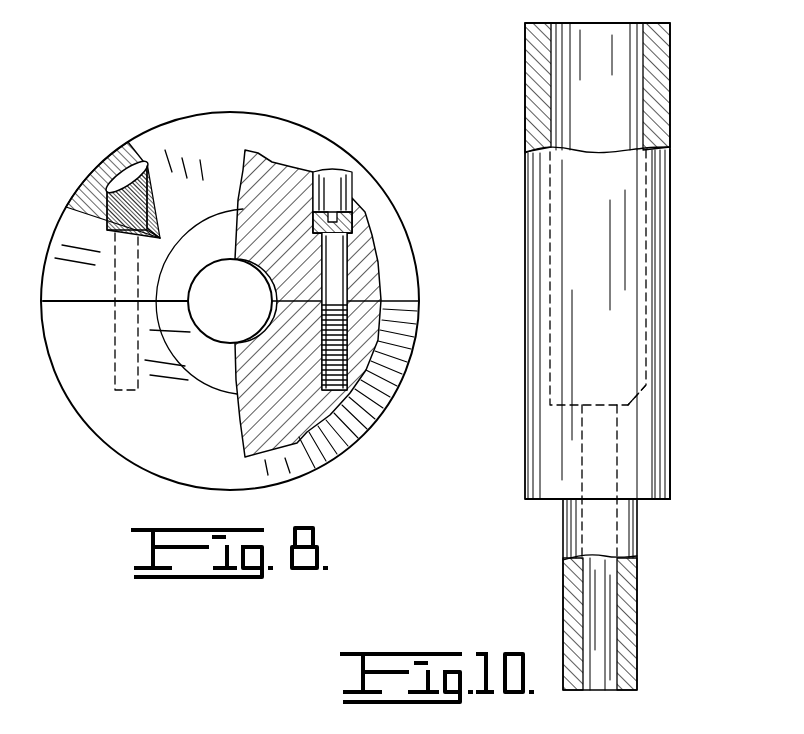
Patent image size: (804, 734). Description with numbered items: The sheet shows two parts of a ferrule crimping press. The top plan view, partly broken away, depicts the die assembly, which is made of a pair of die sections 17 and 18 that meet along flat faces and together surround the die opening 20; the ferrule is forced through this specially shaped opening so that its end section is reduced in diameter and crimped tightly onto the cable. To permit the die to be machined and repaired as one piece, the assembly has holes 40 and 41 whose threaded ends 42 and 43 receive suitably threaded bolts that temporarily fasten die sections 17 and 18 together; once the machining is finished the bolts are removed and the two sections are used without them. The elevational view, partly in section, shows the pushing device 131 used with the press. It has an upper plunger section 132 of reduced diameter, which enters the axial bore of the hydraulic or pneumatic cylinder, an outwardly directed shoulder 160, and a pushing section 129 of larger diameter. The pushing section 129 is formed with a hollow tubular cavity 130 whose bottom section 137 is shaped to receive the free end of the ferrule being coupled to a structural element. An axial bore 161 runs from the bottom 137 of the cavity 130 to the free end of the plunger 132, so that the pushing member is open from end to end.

In FIG. 8, the die section 17 is at (158, 453).
In FIG. 8, the die section 18 is at (268, 172).
In FIG. 8, the die opening 20 is at (242, 301).
In FIG. 8, the hole 40 is at (325, 188).
In FIG. 8, the hole 41 is at (128, 179).
In FIG. 8, the threaded end 42 is at (340, 343).
In FIG. 8, the threaded end 43 is at (115, 372).
In FIG. 10, the pushing section 129 is at (662, 222).
In FIG. 10, the hollow tubular cavity 130 is at (648, 291).
In FIG. 10, the pushing device 131 is at (667, 447).
In FIG. 10, the plunger section 132 is at (568, 537).
In FIG. 10, the bottom section 137 is at (653, 382).
In FIG. 10, the shoulder 160 is at (653, 500).
In FIG. 10, the axial bore 161 is at (600, 607).